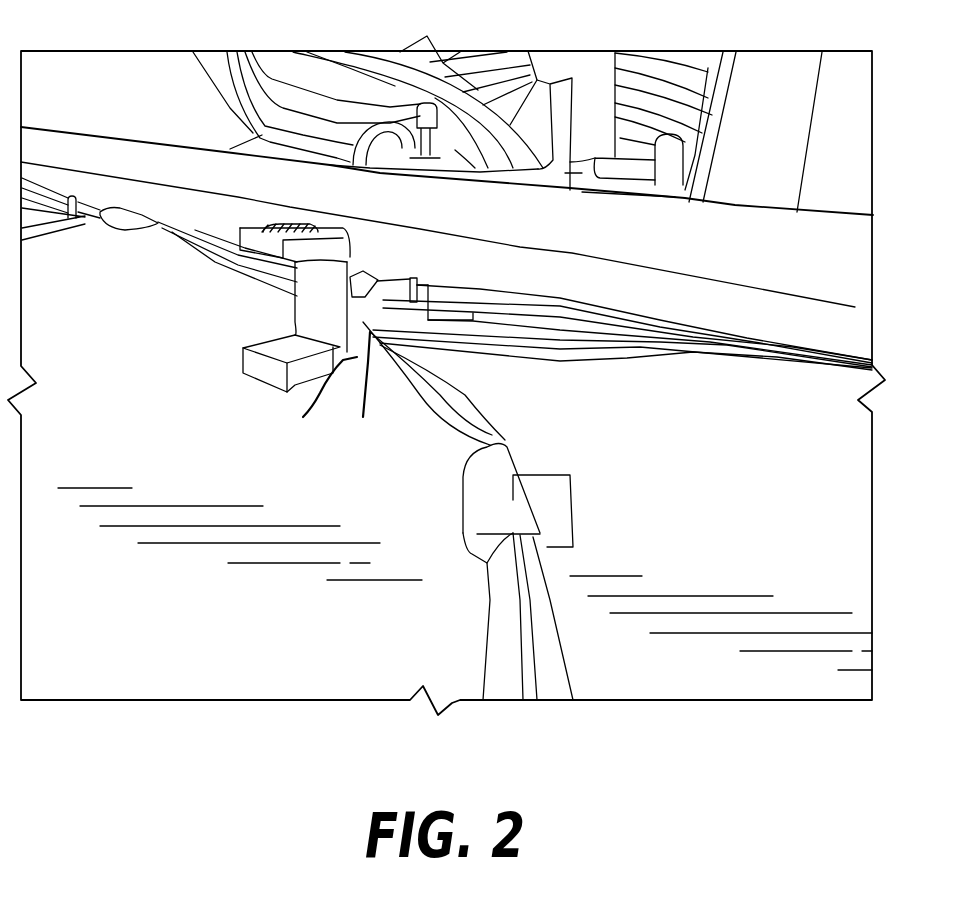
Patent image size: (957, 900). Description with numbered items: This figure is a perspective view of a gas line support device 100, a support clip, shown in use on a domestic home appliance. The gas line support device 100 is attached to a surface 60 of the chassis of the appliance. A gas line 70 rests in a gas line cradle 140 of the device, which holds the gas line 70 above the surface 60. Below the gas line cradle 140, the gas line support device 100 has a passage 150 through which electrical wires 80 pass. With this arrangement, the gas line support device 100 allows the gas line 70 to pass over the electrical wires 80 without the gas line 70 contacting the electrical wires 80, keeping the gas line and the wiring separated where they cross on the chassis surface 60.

The surface 60 is at (282, 657).
The gas line 70 is at (817, 337).
The electrical wires 80 is at (490, 433).
The gas line support device 100 is at (310, 301).
The gas line cradle 140 is at (303, 417).
The passage 150 is at (363, 417).